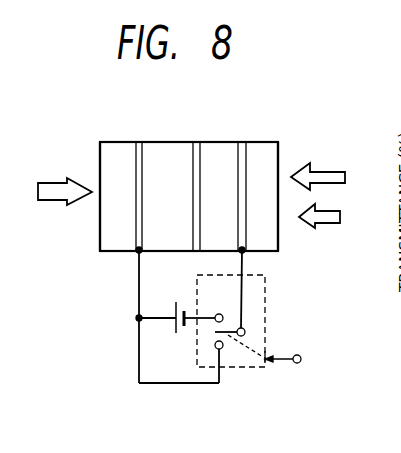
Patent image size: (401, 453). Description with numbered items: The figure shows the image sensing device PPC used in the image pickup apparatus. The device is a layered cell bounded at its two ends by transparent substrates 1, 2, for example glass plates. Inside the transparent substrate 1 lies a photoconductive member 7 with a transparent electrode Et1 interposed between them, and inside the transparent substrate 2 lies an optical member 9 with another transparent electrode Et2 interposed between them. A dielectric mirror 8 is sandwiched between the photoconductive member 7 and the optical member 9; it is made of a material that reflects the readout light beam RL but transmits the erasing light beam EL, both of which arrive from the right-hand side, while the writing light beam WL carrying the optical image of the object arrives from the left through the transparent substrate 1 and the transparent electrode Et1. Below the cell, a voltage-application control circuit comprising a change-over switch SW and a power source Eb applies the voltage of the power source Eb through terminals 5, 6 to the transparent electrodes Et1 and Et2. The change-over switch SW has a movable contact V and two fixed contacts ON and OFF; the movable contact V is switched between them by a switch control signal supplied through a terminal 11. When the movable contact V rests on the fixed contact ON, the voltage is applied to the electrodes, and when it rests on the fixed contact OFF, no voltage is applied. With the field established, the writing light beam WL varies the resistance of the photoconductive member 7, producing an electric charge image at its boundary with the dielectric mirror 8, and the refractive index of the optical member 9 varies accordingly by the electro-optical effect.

The transparent substrate 1 is at (108, 158).
The transparent substrate 2 is at (270, 155).
The terminal 5 is at (137, 254).
The terminal 6 is at (246, 254).
The photoconductive member 7 is at (176, 152).
The dielectric mirror 8 is at (197, 148).
The optical member 9 is at (220, 150).
The terminal 11 is at (299, 365).
The transparent electrode Et1 is at (139, 150).
The transparent electrode Et2 is at (242, 150).
The power source Eb is at (180, 302).
The movable contact V is at (206, 333).
The change-over switch SW is at (242, 334).
The fixed contact on ON is at (222, 313).
The fixed contact off OFF is at (216, 349).
The image sensing device PPC is at (280, 249).
The writing light beam WL is at (49, 193).
The readout light beam RL is at (336, 178).
The erasing light beam EL is at (338, 219).